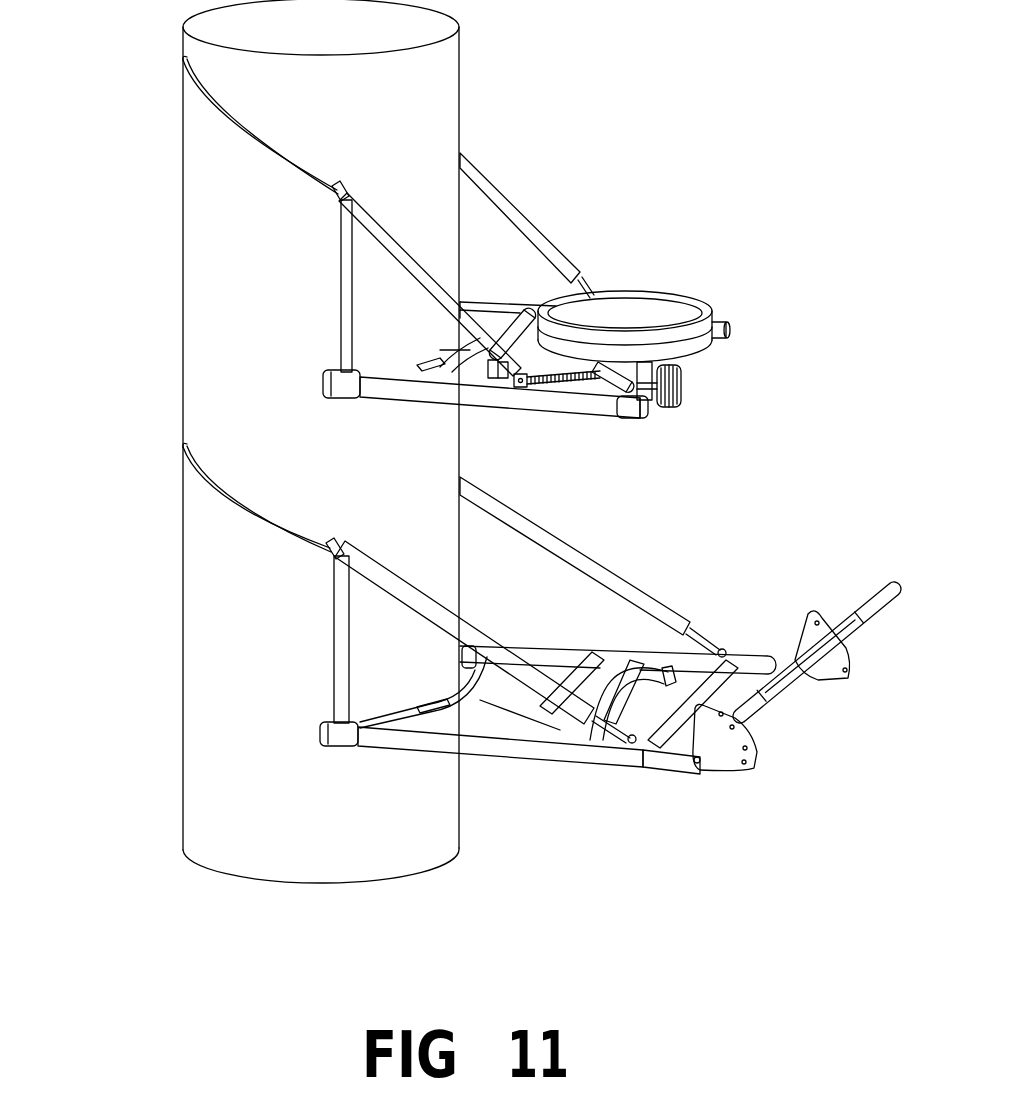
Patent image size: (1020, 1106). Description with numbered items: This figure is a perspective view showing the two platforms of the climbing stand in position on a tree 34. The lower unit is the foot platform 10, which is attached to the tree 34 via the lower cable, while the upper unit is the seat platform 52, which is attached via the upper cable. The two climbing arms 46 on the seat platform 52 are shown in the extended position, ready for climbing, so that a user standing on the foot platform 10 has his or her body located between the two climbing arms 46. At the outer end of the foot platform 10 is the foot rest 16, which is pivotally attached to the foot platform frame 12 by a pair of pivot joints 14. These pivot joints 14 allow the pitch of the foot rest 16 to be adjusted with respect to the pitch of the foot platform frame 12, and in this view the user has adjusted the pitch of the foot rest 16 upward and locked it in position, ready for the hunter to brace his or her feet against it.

The foot platform 10 is at (484, 648).
The foot platform frame 12 is at (565, 648).
The pivot joint 14 is at (699, 765).
The foot rest 16 is at (875, 612).
The tree 34 is at (218, 293).
The climbing arm 46 is at (735, 312).
The seat platform 52 is at (449, 244).